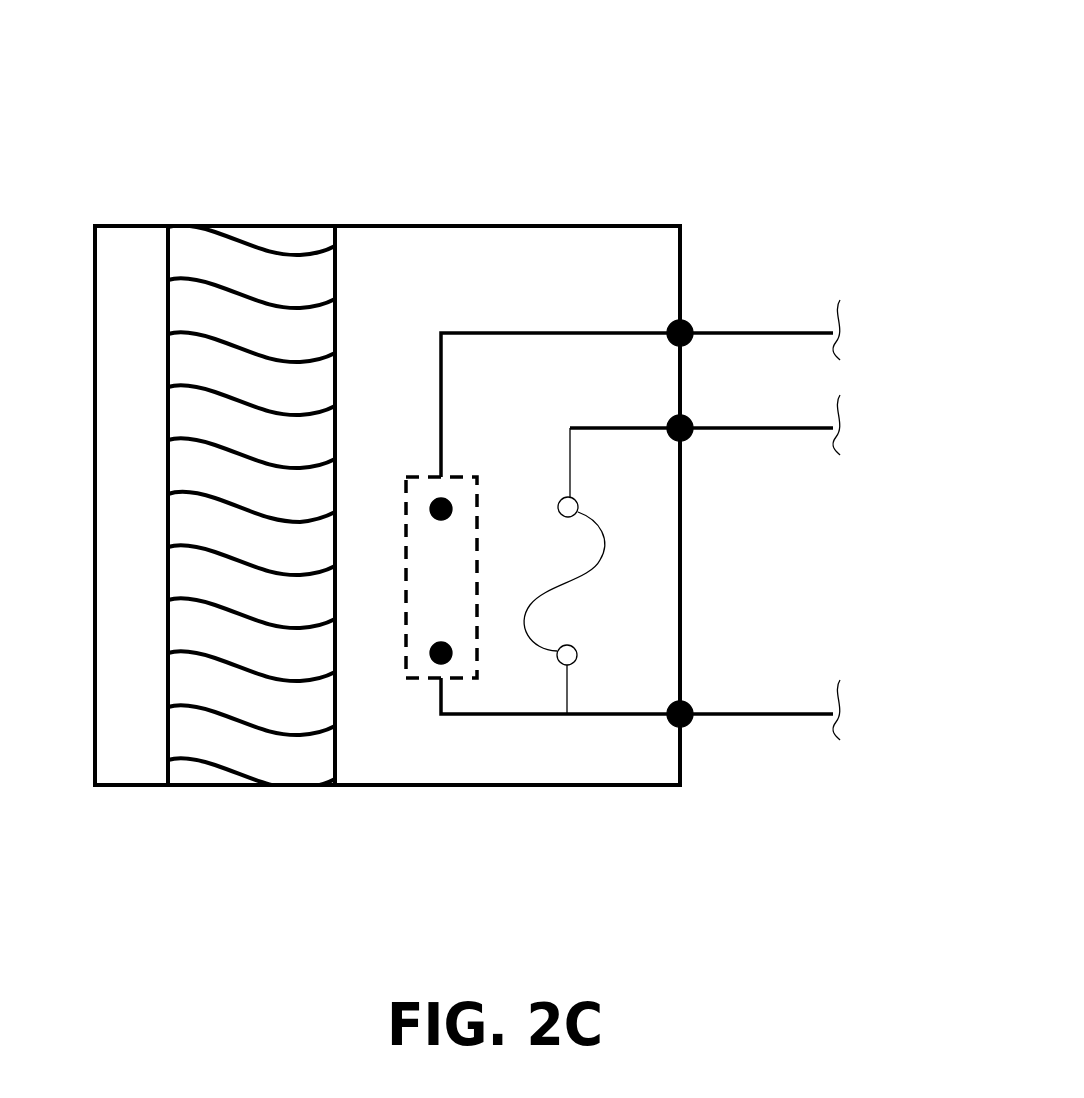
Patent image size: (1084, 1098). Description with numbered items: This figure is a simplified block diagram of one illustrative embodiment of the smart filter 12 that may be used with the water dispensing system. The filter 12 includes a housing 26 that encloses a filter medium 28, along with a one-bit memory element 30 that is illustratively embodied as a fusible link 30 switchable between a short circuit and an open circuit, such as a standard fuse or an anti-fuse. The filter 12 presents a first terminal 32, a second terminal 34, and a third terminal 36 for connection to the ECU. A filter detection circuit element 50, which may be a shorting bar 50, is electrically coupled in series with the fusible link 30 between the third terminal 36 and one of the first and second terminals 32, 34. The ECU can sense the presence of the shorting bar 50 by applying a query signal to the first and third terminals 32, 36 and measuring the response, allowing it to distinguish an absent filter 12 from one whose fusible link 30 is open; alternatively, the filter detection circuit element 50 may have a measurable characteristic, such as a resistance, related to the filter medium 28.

The filter 12 is at (490, 168).
The housing 26 is at (132, 750).
The filter medium 28 is at (274, 762).
The one-bit memory element 30 is at (584, 727).
The first terminal 32 is at (682, 726).
The second terminal 34 is at (682, 440).
The third terminal 36 is at (681, 322).
The filter detection circuit element 50 is at (417, 682).